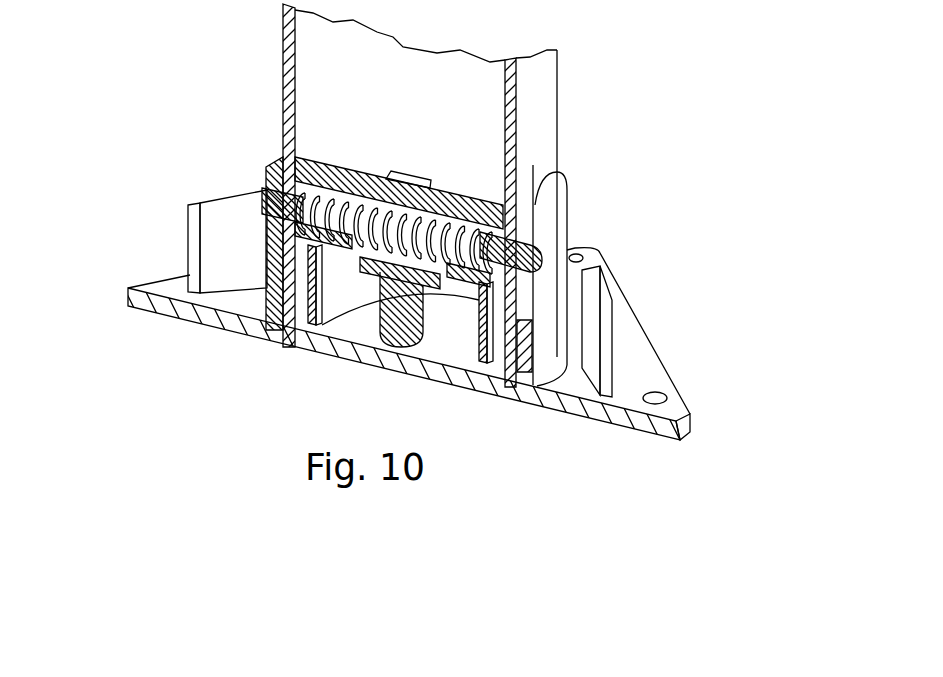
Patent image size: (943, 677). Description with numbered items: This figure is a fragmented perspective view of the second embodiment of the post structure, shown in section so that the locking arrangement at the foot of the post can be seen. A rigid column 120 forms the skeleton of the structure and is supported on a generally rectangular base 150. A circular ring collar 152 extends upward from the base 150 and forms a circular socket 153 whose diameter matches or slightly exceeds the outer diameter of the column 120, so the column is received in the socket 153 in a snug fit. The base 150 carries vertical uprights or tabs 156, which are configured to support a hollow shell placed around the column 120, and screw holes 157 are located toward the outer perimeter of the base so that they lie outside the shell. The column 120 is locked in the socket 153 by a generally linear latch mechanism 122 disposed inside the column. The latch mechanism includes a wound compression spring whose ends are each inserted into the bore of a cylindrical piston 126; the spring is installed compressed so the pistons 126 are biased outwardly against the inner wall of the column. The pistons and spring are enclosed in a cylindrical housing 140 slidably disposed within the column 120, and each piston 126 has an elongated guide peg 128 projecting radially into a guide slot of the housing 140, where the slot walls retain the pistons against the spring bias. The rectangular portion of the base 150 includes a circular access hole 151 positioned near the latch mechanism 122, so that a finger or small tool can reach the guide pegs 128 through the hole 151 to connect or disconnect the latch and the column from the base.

The rigid column 120 is at (292, 88).
The latch mechanism 122 is at (407, 165).
The cylindrical piston 126 is at (267, 192).
The guide peg 128 is at (327, 297).
The cylindrical housing 140 is at (443, 203).
The base 150 is at (637, 367).
The access hole 151 is at (320, 338).
The circular ring collar 152 is at (267, 182).
The circular socket 153 is at (535, 203).
The vertical upright tab 156 is at (592, 327).
The screw hole 157 is at (667, 398).